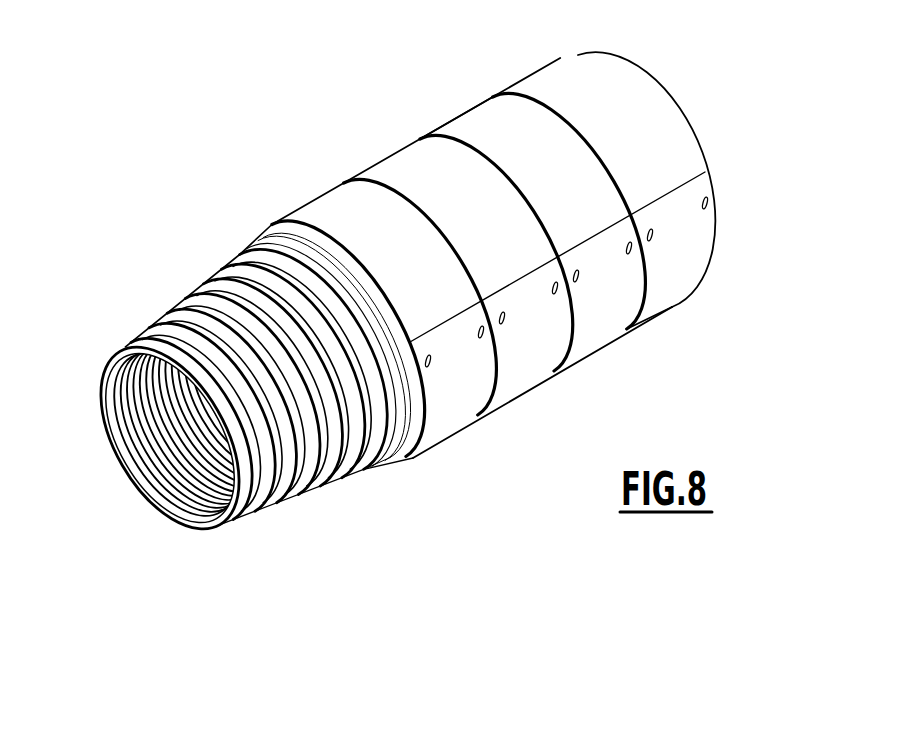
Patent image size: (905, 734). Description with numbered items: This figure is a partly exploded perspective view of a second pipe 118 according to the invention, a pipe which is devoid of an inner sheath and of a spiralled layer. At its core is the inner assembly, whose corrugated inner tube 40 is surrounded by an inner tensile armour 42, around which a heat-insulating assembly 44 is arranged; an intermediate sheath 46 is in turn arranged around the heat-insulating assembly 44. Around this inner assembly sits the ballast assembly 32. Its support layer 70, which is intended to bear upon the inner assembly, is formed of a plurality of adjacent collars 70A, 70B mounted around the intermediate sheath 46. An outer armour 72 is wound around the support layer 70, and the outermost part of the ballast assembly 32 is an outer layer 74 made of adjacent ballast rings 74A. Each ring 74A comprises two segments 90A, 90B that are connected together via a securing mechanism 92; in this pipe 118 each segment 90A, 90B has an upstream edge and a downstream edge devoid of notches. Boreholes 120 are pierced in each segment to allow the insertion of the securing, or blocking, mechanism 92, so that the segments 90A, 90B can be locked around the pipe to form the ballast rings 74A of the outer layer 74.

The second pipe 118 is at (157, 242).
The ballast assembly 32 is at (236, 190).
The corrugated inner tube 40 is at (139, 505).
The inner tensile armour 42 is at (244, 524).
The heat-insulating assembly 44 is at (301, 512).
The intermediate sheath 46 is at (347, 484).
The support layer 70 is at (209, 261).
The collar 70A is at (257, 273).
The collar rear portion 70B is at (366, 421).
The outer armour 72 is at (311, 254).
The outer layer 74 is at (707, 109).
The ballast ring 74A is at (628, 91).
The first segment 90A is at (543, 84).
The second segment 90B is at (684, 273).
The securing mechanism 92 is at (714, 205).
The boreholes 120 is at (652, 240).